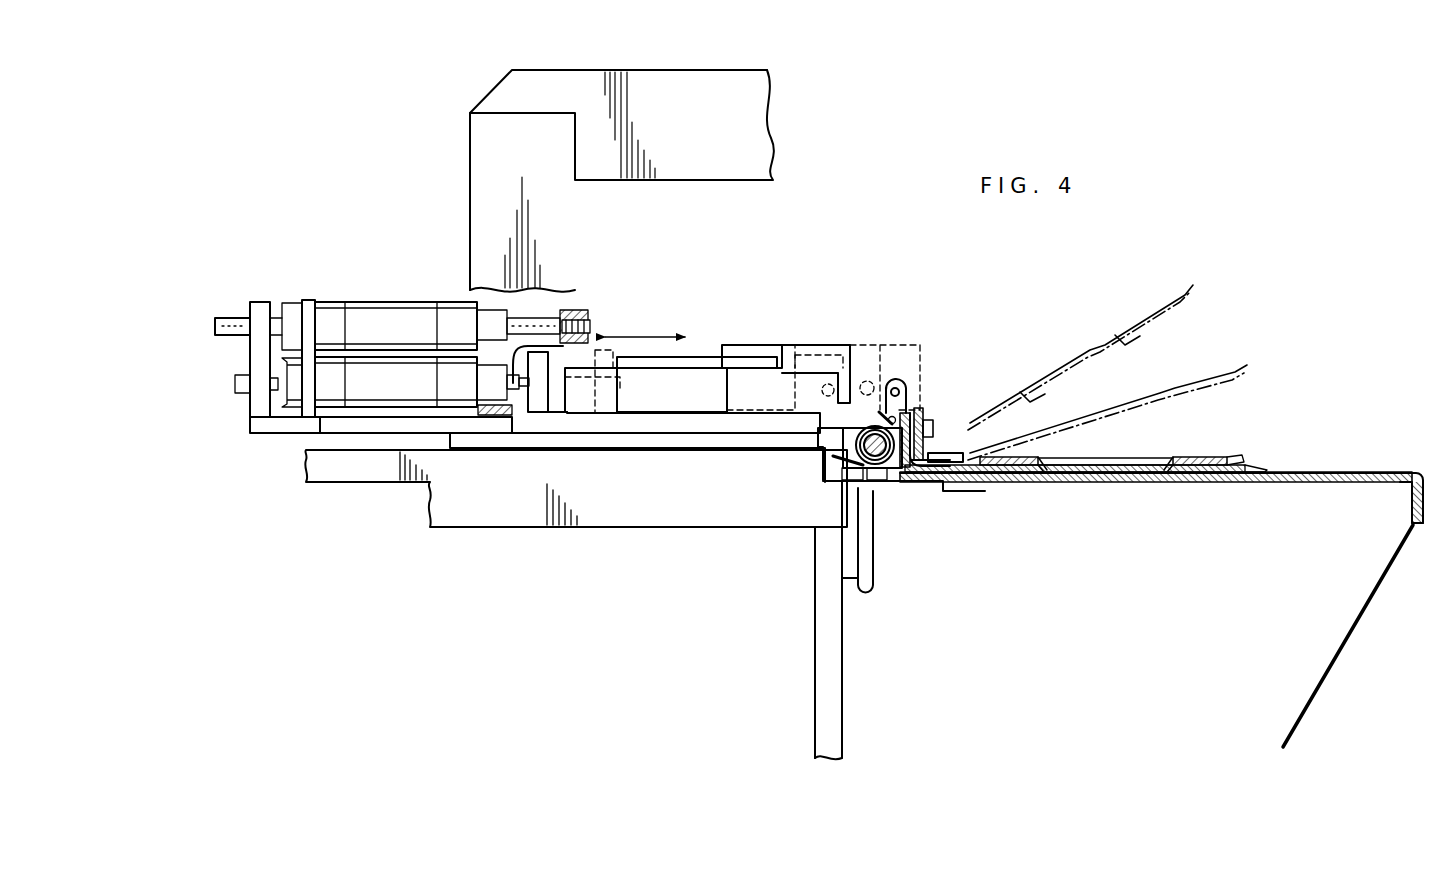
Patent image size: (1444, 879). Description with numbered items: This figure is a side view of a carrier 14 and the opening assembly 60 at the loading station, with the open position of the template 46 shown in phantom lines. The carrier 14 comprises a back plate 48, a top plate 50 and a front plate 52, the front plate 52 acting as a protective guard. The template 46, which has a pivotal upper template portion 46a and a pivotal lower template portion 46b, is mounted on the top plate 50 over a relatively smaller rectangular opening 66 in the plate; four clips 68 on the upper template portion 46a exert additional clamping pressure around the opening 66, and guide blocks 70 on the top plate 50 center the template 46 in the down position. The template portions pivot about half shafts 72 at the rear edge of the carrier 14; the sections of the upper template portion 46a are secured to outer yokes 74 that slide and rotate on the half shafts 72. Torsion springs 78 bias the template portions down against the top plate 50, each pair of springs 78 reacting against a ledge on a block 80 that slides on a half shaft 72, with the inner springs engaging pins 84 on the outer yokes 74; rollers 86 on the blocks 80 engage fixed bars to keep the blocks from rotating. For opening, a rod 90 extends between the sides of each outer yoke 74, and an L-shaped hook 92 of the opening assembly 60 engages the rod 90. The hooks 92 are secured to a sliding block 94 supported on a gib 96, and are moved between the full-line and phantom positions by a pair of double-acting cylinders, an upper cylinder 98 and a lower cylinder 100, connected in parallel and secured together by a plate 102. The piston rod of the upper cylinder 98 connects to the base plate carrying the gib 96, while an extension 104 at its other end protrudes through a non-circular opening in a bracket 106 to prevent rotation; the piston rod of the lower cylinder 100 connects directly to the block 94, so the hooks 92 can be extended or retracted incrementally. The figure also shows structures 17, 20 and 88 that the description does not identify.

The carrier 14 is at (1423, 529).
The support block 17 is at (490, 160).
The base plate 20 is at (352, 474).
The template 46 is at (1257, 384).
The upper template portion 46a is at (1240, 457).
The lower template portion 46b is at (1266, 466).
The back plate 48 is at (833, 668).
The top plate 50 is at (1361, 472).
The front plate 52 is at (1315, 700).
The opening assembly 60 is at (750, 285).
The rectangular opening 66 is at (1118, 481).
The clips 68 is at (1042, 462).
The guide blocks 70 is at (945, 458).
The half shafts 72 is at (879, 452).
The outer yokes 74 is at (895, 405).
The torsion springs 78 is at (838, 463).
The block 80 is at (850, 430).
The pins 84 is at (912, 408).
The rollers 86 is at (853, 479).
The hook bracket 88 is at (878, 478).
The rod 90 is at (906, 380).
The L-shaped hook 92 is at (812, 350).
The sliding block 94 is at (682, 380).
The gib 96 is at (683, 425).
The upper cylinder 98 is at (400, 337).
The lower cylinder 100 is at (410, 392).
The plate 102 is at (309, 305).
The extension 104 is at (238, 322).
The bracket 106 is at (261, 306).